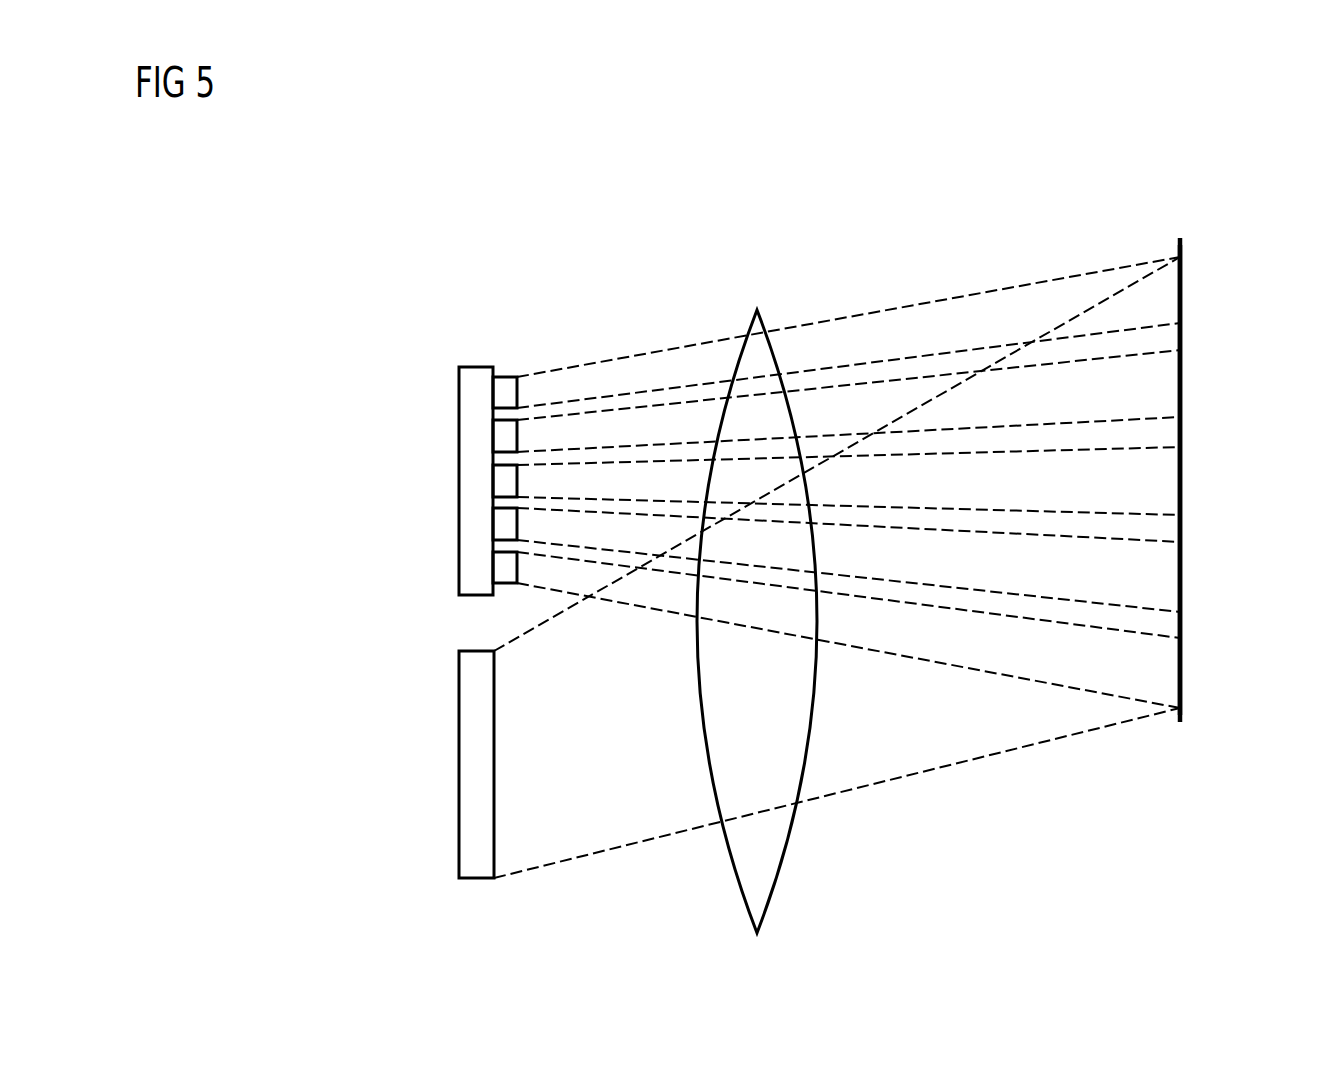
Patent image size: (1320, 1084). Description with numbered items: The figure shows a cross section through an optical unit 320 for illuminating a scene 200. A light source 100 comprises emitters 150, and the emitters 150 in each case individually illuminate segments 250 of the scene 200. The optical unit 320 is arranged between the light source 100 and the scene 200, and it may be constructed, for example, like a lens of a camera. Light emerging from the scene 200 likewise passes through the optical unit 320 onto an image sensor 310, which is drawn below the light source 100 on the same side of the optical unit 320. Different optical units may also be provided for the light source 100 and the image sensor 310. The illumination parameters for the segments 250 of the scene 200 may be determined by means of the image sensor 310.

The light source 100 is at (476, 358).
The emitters 150 is at (503, 392).
The scene 200 is at (1180, 220).
The segments 250 is at (1182, 289).
The image sensor 310 is at (459, 765).
The optical unit 320 is at (757, 310).